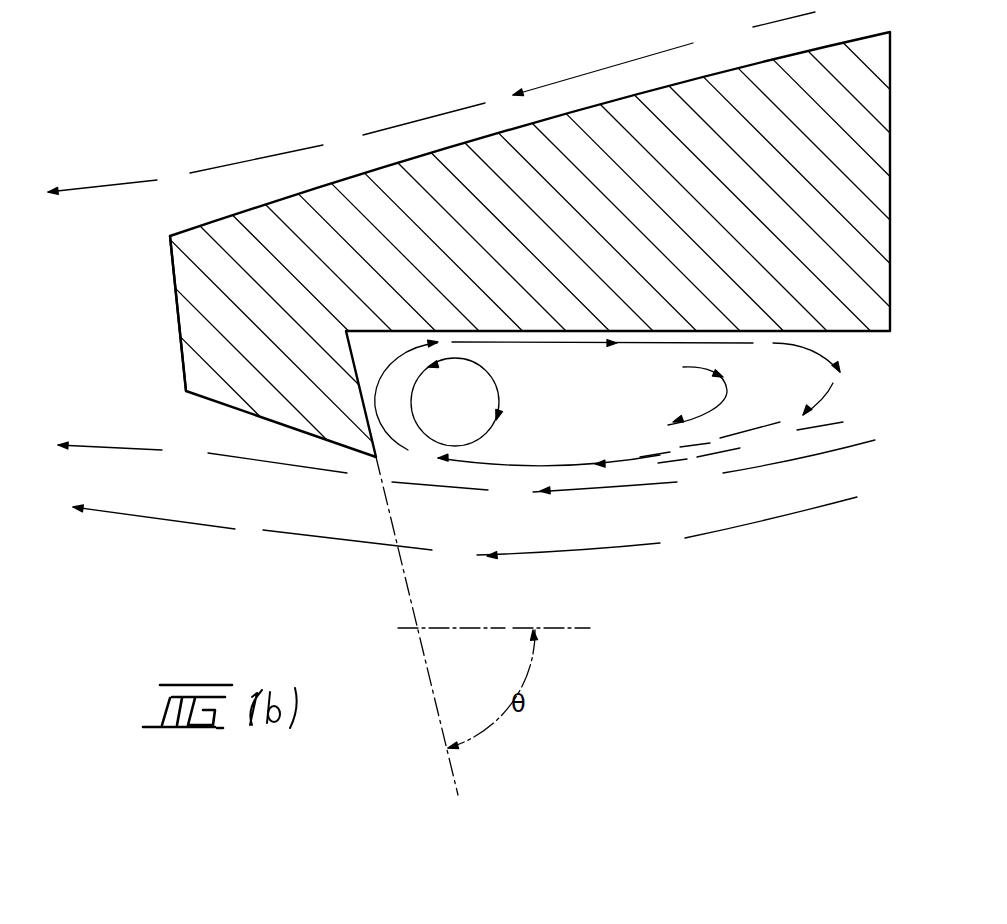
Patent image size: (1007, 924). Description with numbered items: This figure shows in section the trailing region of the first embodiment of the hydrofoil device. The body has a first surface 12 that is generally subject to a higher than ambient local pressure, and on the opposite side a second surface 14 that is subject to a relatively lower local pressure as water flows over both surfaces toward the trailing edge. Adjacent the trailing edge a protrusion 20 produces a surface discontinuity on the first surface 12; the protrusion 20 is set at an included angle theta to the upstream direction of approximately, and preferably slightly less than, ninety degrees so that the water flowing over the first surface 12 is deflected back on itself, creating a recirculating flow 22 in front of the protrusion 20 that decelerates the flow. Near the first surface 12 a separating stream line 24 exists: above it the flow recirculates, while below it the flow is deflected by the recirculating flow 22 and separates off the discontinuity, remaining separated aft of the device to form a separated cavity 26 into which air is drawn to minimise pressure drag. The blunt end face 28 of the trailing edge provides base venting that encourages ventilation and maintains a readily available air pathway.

The first surface 12 is at (810, 331).
The second surface 14 is at (590, 105).
The protrusion 20 is at (247, 367).
The recirculating flow 22 is at (527, 420).
The separating stream line 24 is at (667, 483).
The separated cavity 26 is at (110, 232).
The blunt end face 28 is at (170, 265).